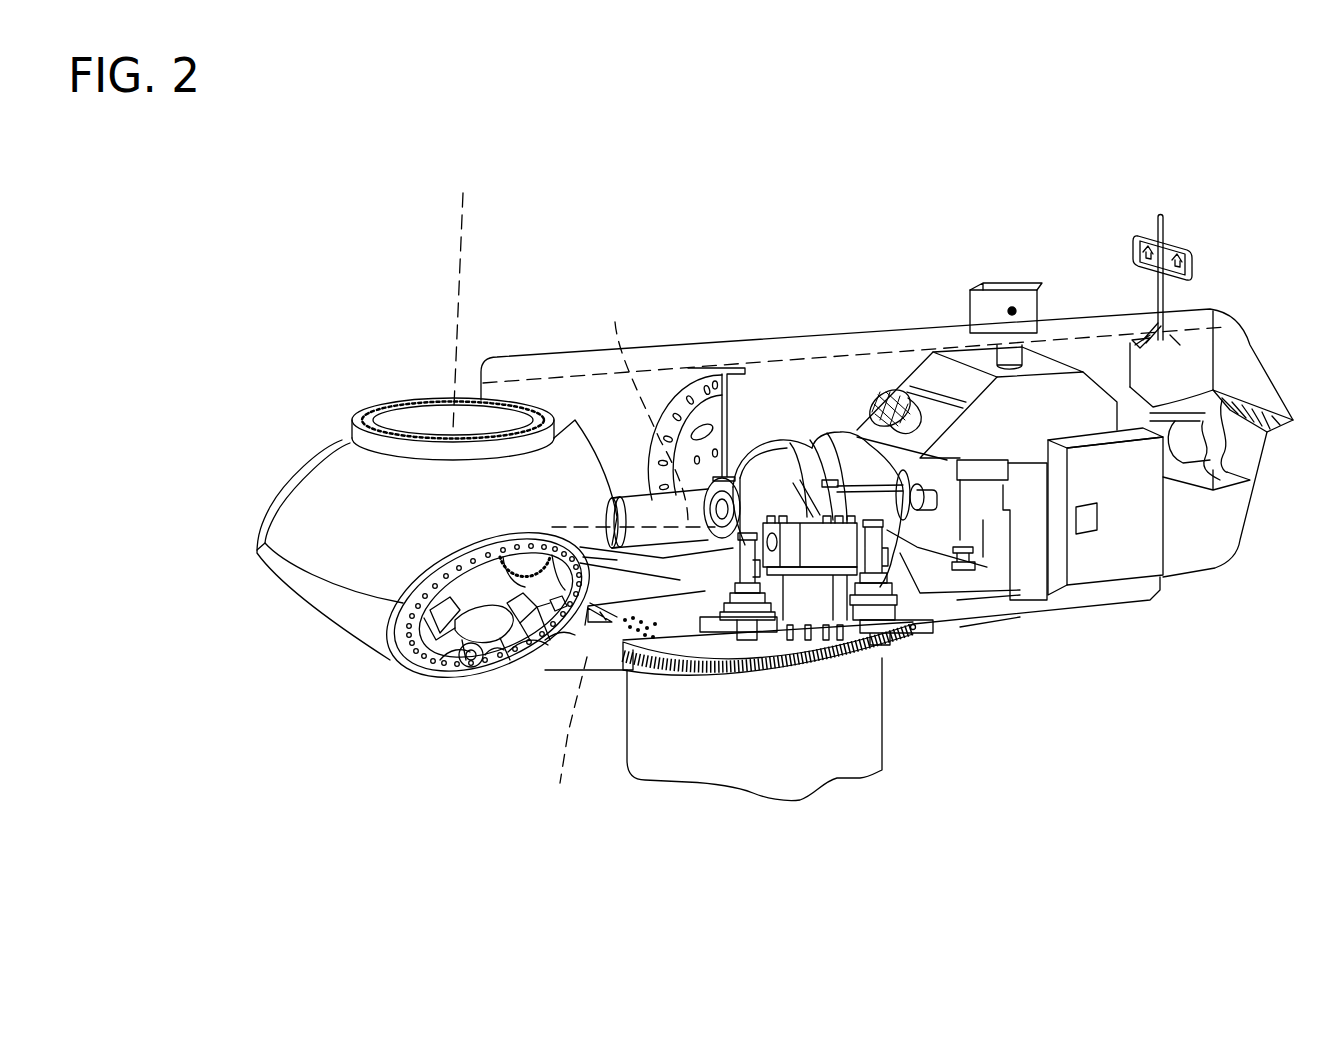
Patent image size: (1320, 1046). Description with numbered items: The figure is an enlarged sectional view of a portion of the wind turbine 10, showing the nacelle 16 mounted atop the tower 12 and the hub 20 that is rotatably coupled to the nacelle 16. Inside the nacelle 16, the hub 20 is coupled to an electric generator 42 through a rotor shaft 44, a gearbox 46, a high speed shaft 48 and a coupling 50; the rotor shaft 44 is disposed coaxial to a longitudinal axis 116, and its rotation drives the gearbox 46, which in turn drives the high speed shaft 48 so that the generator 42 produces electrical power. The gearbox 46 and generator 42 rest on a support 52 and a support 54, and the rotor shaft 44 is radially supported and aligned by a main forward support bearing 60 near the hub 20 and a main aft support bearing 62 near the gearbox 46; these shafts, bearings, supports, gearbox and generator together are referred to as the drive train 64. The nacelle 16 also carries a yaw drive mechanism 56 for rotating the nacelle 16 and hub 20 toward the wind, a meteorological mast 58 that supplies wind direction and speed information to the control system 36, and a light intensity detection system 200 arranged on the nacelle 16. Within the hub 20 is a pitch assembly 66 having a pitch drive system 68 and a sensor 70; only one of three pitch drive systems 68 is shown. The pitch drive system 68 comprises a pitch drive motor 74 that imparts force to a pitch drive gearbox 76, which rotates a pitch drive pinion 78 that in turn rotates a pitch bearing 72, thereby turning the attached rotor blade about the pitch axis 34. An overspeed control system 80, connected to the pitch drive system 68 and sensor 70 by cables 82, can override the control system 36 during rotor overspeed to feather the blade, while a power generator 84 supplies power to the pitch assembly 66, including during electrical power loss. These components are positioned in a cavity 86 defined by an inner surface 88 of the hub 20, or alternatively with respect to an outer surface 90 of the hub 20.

The wind turbine 10 is at (280, 268).
The tower 12 is at (807, 780).
The nacelle 16 is at (863, 283).
The hub 20 is at (241, 533).
The pitch axis 34 is at (462, 215).
The control system 36 is at (1097, 463).
The electric generator 42 is at (980, 545).
The rotor shaft 44 is at (657, 513).
The gearbox 46 is at (855, 455).
The high speed shaft 48 is at (915, 608).
The coupling 50 is at (935, 455).
The support 52 is at (857, 627).
The support 54 is at (957, 570).
The yaw drive mechanism 56 is at (742, 632).
The meteorological mast 58 is at (1200, 252).
The main forward support bearing 60 is at (628, 533).
The main aft support bearing 62 is at (778, 480).
The drive train 64 is at (689, 448).
The pitch assembly 66 is at (447, 523).
The pitch drive system 68 is at (430, 630).
The sensor 70 is at (590, 617).
The pitch bearing 72 is at (425, 668).
The pitch drive motor 74 is at (410, 597).
The pitch drive gearbox 76 is at (482, 590).
The pitch drive pinion 78 is at (460, 665).
The overspeed control system 80 is at (520, 657).
The cables 82 is at (560, 557).
The power generator 84 is at (547, 660).
The cavity 86 is at (493, 660).
The inner surface 88 is at (534, 540).
The outer surface 90 is at (405, 605).
The longitudinal axis 116 is at (638, 399).
The light intensity detection system 200 is at (1010, 270).